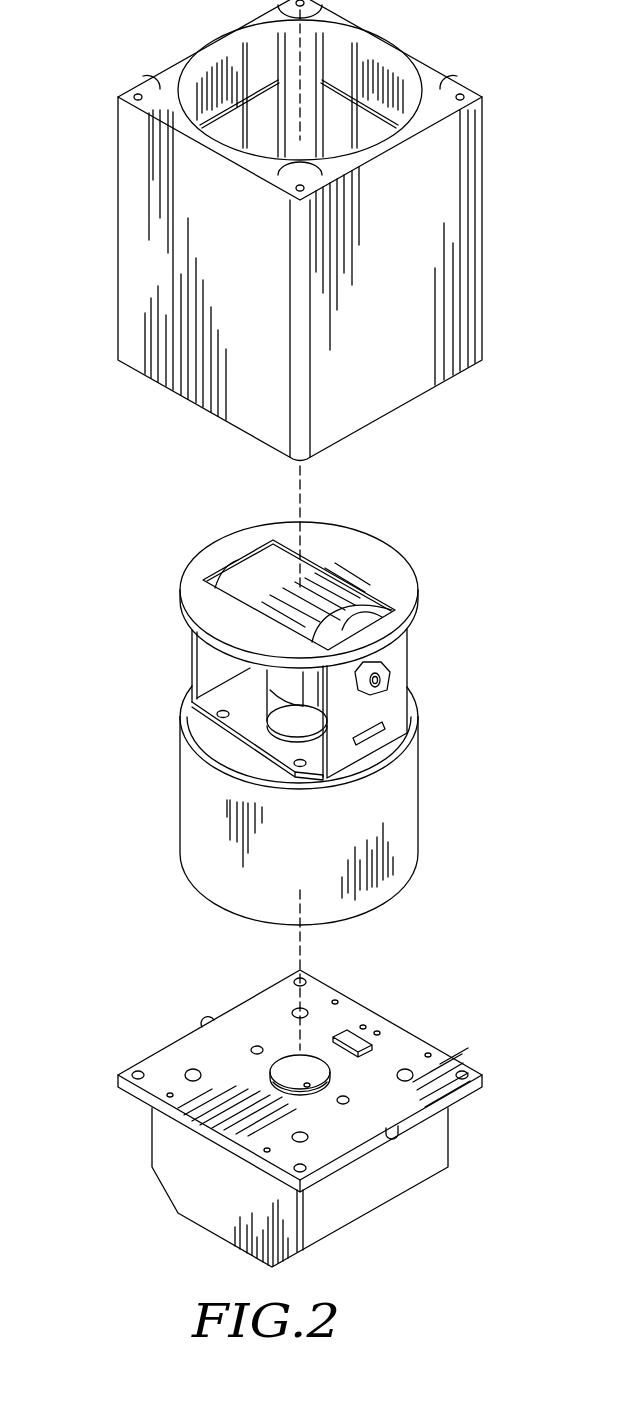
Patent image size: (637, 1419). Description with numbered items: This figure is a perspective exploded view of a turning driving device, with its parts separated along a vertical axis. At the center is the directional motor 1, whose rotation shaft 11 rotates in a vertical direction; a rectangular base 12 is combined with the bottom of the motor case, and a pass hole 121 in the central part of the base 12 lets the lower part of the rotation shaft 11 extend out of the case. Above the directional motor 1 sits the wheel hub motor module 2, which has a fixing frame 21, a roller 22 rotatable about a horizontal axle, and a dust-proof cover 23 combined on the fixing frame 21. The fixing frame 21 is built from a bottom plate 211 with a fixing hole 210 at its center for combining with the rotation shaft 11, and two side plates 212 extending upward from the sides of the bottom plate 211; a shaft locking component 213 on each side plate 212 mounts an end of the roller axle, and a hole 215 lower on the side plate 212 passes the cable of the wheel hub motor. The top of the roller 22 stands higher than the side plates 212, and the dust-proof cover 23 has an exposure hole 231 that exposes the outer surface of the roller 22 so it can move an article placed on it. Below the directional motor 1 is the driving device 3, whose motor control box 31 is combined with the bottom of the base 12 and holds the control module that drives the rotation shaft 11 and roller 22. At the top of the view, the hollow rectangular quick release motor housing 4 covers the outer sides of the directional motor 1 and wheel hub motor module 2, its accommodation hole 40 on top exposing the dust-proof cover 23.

The directional motor 1 is at (188, 828).
The rotation shaft 11 is at (280, 732).
The base 12 is at (300, 1081).
The pass hole 121 is at (280, 1067).
The wheel hub motor module 2 is at (304, 672).
The fixing frame 21 is at (306, 729).
The fixing hole 210 is at (280, 722).
The bottom plate 211 is at (228, 720).
The side plate 212 is at (404, 729).
The shaft locking component 213 is at (385, 672).
The hole 215 is at (375, 733).
The roller 22 is at (267, 570).
The dust-proof cover 23 is at (327, 588).
The exposure hole 231 is at (330, 573).
The driving device 3 is at (296, 1187).
The motor control box 31 is at (432, 1148).
The quick release motor housing 4 is at (267, 230).
The accommodation hole 40 is at (400, 58).